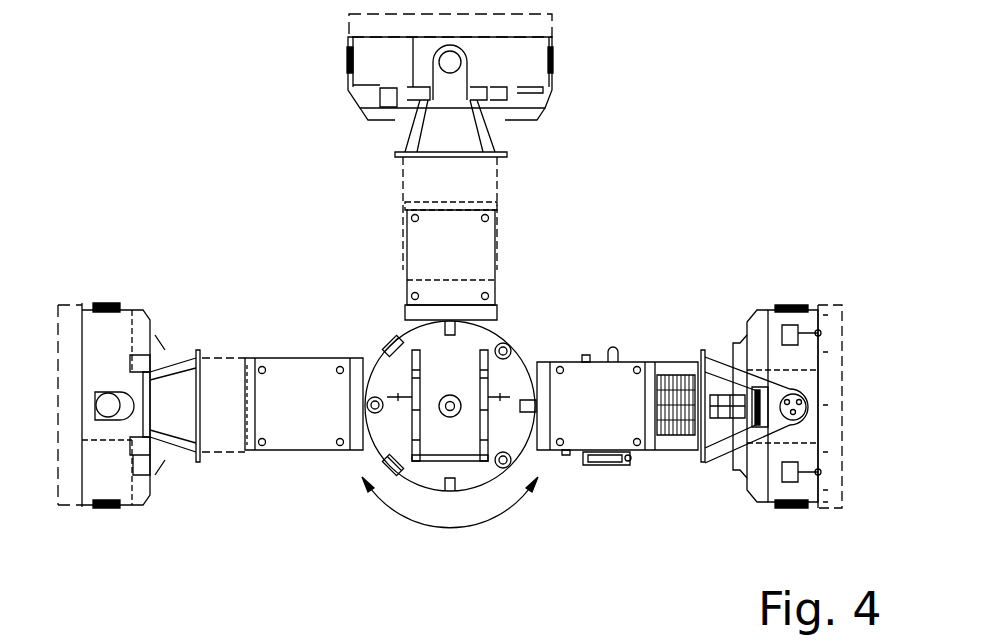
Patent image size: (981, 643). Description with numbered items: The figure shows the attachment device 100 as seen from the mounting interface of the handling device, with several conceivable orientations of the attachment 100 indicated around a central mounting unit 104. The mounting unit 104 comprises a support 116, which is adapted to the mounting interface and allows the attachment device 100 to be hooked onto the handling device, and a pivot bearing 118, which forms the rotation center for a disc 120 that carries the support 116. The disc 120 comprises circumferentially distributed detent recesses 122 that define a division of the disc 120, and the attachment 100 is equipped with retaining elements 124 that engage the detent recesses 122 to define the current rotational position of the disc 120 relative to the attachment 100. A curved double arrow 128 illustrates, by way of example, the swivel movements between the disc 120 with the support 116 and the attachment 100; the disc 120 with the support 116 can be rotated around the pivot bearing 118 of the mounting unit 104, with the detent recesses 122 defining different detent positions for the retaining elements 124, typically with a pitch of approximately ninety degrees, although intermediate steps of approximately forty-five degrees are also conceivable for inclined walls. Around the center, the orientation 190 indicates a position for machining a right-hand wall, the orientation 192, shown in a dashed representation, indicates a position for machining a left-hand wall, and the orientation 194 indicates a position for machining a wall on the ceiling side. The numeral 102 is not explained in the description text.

The attachment device 100 is at (678, 137).
The end effector module 102 is at (780, 297).
The mounting unit 104 is at (537, 331).
The support 116 is at (412, 378).
The pivot bearing 118 is at (450, 395).
The disc 120 is at (517, 378).
The detent recesses 122 is at (390, 466).
The retaining elements 124 is at (507, 343).
The curved double arrow 128 is at (503, 518).
The orientation for machining a right-hand wall 190 is at (803, 268).
The orientation for machining a left-hand wall 192 is at (93, 271).
The orientation for machining a wall on the ceiling side 194 is at (276, 56).